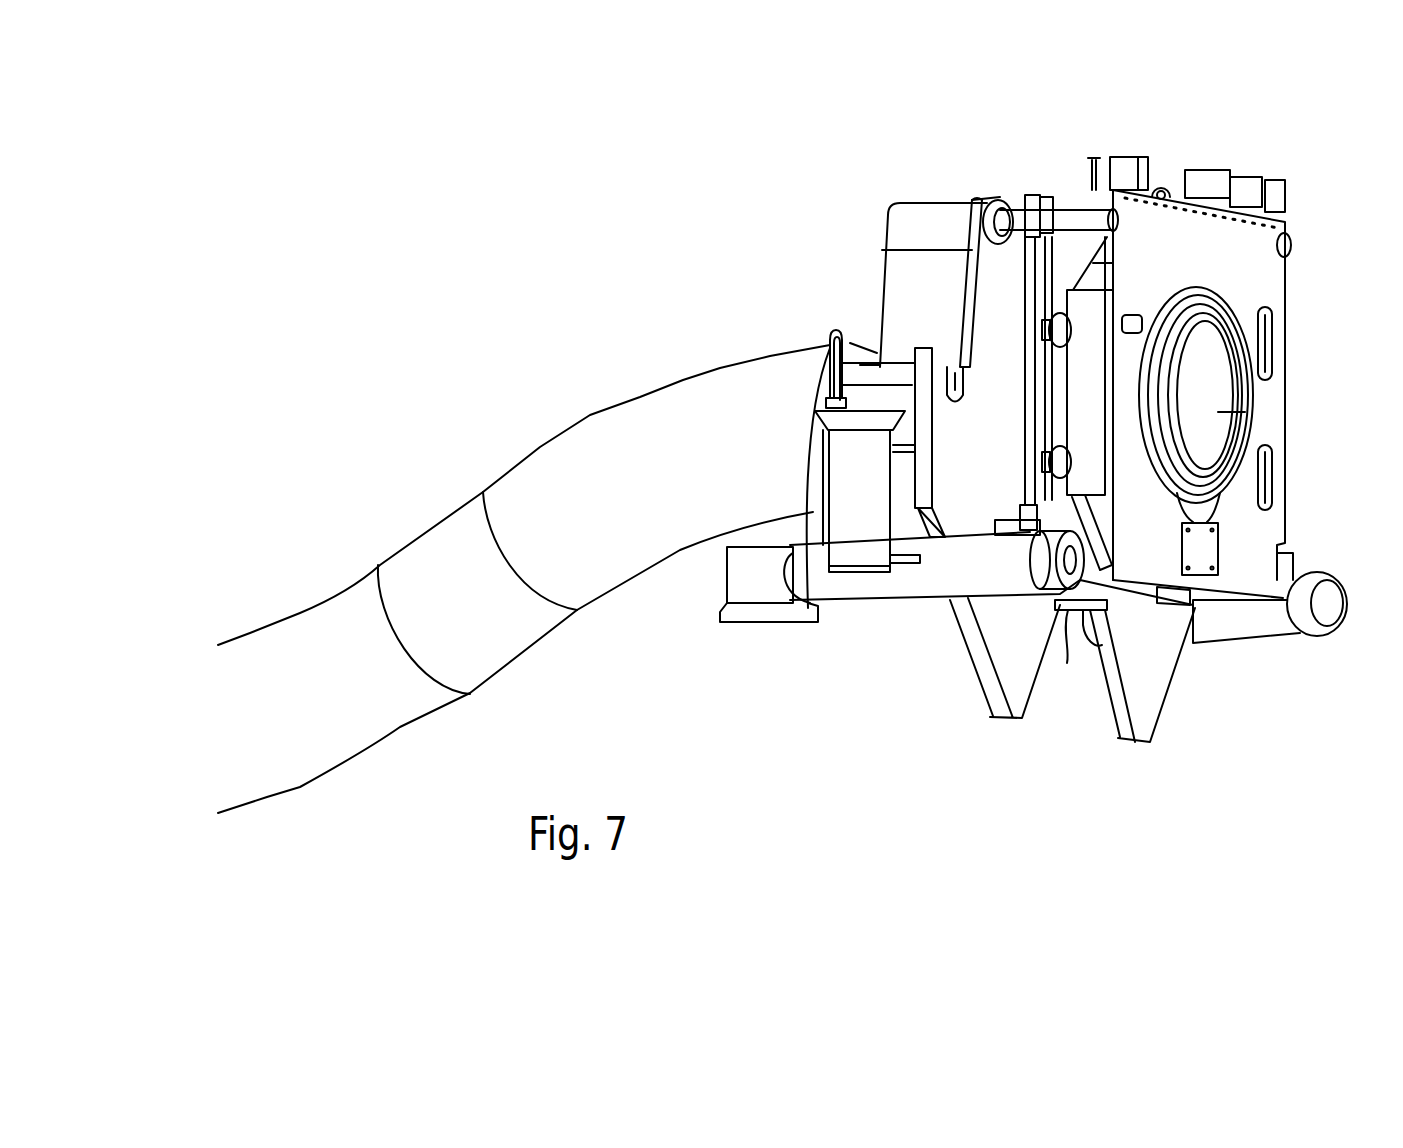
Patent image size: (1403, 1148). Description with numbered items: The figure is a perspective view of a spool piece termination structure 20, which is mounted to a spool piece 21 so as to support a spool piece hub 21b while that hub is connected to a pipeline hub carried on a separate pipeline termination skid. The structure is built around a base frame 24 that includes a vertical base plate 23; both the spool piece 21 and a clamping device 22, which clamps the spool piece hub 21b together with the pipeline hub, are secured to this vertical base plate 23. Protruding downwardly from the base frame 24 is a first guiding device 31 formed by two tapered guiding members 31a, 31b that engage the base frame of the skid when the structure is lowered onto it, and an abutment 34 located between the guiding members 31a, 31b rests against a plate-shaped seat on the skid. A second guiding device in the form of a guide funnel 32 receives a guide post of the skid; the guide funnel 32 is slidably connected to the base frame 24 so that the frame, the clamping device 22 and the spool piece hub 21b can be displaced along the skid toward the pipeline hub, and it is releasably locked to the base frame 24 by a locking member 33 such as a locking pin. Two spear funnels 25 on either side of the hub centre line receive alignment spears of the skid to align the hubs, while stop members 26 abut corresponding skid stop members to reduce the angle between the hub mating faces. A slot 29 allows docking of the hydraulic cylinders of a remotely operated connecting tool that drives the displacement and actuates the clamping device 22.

The spool piece termination structure 20 is at (1195, 126).
The spool piece 21 is at (457, 503).
The spool piece hub 21b is at (1185, 392).
The clamping device 22 is at (1272, 522).
The vertical base plate 23 is at (970, 277).
The base frame 24 is at (912, 277).
The spear funnel 25 is at (945, 580).
The stop member 26 is at (1073, 210).
The slot 29 is at (953, 365).
The first guiding device 31 is at (1086, 714).
The tapered guiding member 31a is at (990, 670).
The tapered guiding member 31b is at (1158, 685).
The guide funnel 32 is at (727, 567).
The locking member 33 is at (812, 370).
The abutment 34 is at (1077, 653).